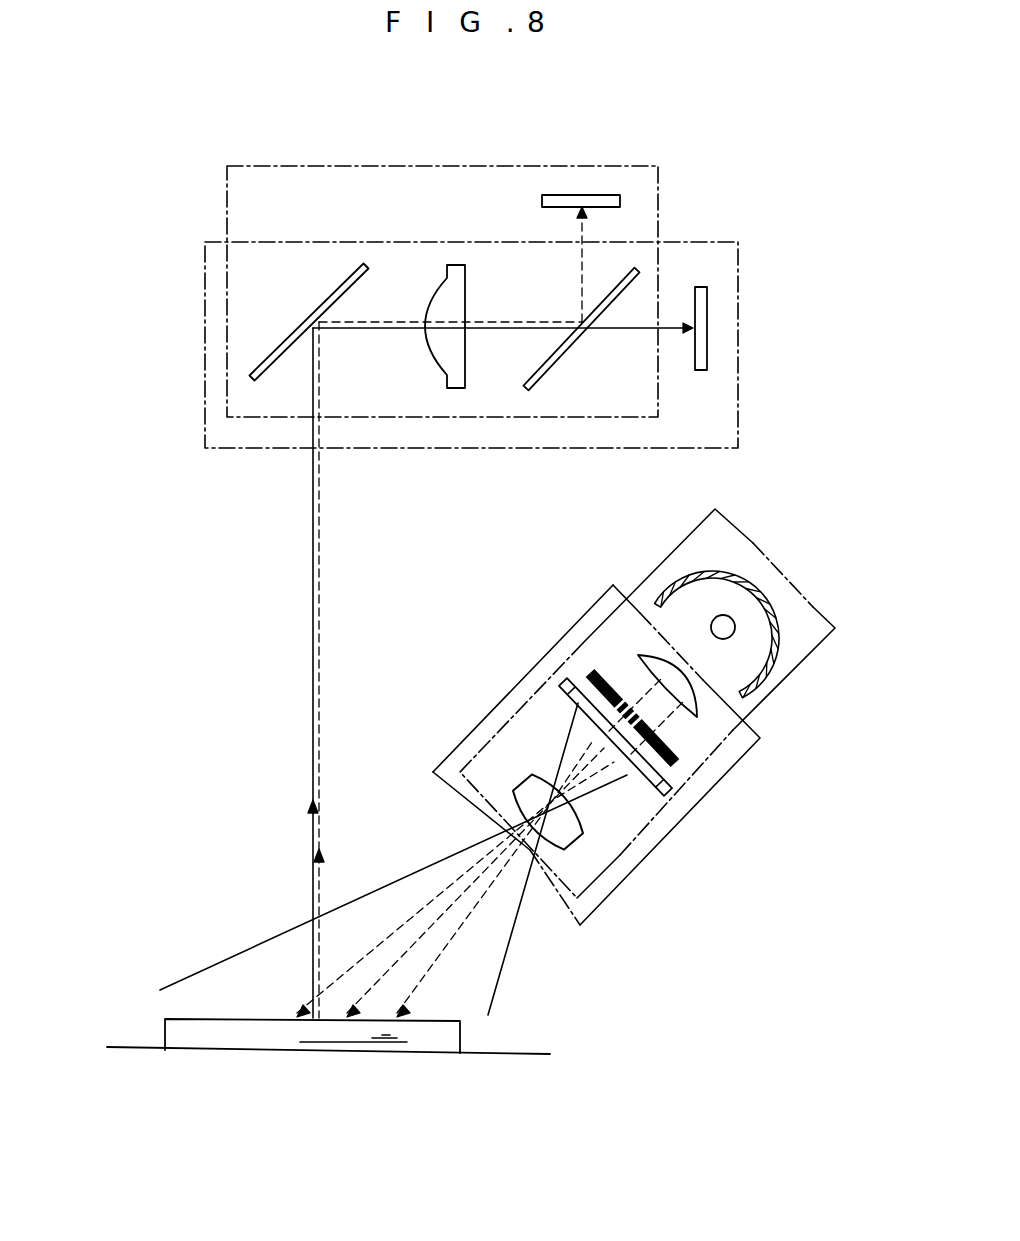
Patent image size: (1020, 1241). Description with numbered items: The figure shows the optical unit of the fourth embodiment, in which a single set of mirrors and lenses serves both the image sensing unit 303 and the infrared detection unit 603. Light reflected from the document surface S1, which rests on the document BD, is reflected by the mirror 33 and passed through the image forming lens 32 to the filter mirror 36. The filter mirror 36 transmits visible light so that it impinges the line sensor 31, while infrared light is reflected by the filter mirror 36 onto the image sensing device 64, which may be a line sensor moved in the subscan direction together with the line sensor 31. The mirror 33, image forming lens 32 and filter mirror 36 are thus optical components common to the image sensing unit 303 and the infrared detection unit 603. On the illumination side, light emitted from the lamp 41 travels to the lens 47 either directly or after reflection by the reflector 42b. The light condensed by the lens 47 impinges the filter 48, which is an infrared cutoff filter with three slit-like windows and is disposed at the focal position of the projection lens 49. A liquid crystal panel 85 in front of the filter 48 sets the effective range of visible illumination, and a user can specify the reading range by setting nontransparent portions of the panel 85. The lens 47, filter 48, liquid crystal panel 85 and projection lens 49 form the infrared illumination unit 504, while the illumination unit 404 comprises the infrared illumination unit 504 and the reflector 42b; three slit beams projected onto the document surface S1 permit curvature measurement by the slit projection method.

The infrared detection unit 603 is at (302, 166).
The image sensing unit 303 is at (716, 242).
The mirror 33 is at (352, 282).
The image forming lens 32 is at (458, 265).
The image sensing device 64 is at (574, 195).
The filter mirror 36 is at (530, 368).
The line sensor 31 is at (707, 313).
The infrared illumination unit 504 is at (513, 686).
The illumination unit 404 is at (643, 581).
The lamp 41 is at (735, 619).
The reflector 42b is at (767, 682).
The lens 47 is at (698, 705).
The filter 48 is at (673, 763).
The liquid crystal panel 85 is at (667, 795).
The projection lens 49 is at (575, 843).
The sample stage BD is at (176, 1037).
The document surface S1 is at (250, 1020).